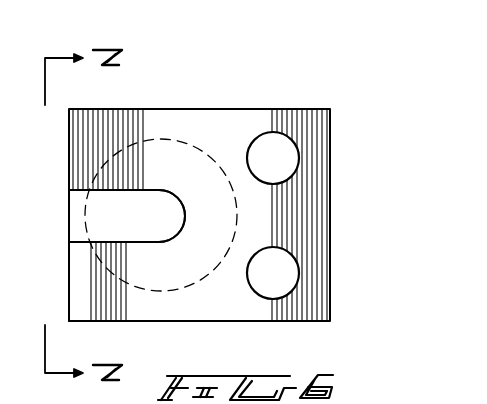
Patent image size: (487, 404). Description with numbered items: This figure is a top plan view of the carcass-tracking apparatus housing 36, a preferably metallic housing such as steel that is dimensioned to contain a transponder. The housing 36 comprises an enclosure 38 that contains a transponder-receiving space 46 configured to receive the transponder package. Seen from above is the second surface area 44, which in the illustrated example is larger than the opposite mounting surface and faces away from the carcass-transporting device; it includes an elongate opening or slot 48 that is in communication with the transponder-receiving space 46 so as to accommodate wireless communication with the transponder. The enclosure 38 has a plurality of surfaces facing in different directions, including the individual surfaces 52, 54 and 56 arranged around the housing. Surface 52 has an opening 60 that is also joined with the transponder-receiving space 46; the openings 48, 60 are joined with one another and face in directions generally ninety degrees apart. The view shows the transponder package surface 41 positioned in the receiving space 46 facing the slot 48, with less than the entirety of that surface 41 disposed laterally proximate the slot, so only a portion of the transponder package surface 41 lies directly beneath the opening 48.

The carcass-tracking apparatus housing 36 is at (360, 114).
The enclosure 38 is at (88, 100).
The transponder package surface 41 is at (141, 227).
The second surface area 44 is at (193, 127).
The transponder-receiving space 46 is at (74, 210).
The opening 48 is at (178, 199).
The surface 52 is at (10, 4).
The surface 54 is at (278, 323).
The surface 56 is at (250, 109).
The opening 60 is at (70, 236).